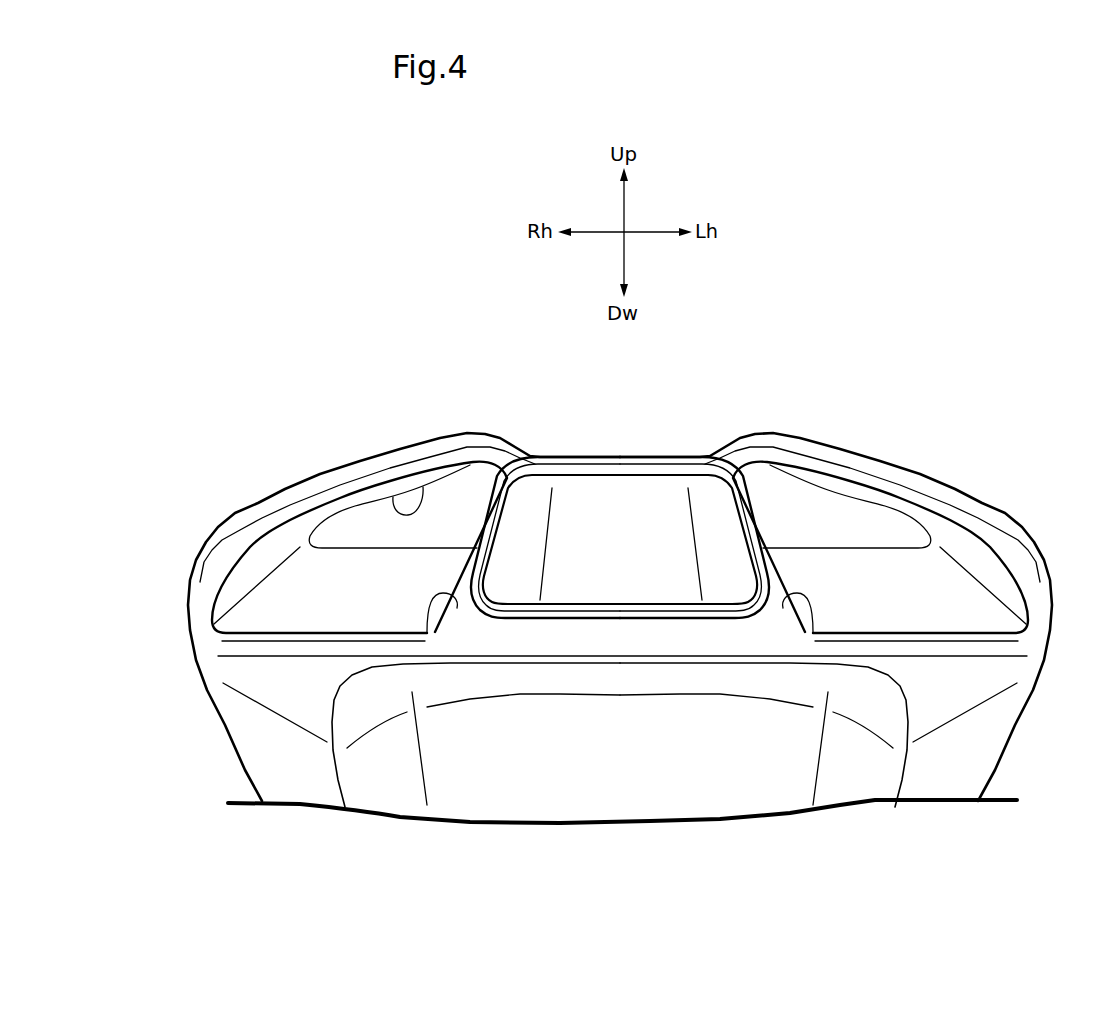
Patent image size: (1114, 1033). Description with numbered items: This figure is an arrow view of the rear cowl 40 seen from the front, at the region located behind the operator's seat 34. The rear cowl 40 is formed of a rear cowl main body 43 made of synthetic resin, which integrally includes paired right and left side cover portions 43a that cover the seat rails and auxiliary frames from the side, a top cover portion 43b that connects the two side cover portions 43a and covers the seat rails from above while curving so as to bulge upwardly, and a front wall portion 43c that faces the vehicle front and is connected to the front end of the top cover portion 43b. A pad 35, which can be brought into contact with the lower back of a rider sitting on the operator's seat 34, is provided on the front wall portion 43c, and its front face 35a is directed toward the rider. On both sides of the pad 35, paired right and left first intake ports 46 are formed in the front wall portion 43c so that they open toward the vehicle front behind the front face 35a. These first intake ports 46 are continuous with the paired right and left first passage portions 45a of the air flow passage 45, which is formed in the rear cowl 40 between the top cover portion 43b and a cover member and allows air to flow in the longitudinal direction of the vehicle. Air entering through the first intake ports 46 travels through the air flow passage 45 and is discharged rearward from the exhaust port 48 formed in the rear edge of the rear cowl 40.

The operator's seat 34 is at (650, 800).
The pad 35 is at (582, 458).
The front face of the pad 35a is at (652, 493).
The rear cowl 40 is at (1050, 552).
The rear cowl main body 43 is at (208, 525).
The side cover portions 43a is at (207, 688).
The top cover portion 43b is at (831, 446).
The front wall portion 43c is at (632, 633).
The air flow passage 45 is at (948, 568).
The first passage portions 45a is at (375, 608).
The first intake ports 46 is at (435, 632).
The exhaust port 48 is at (427, 490).